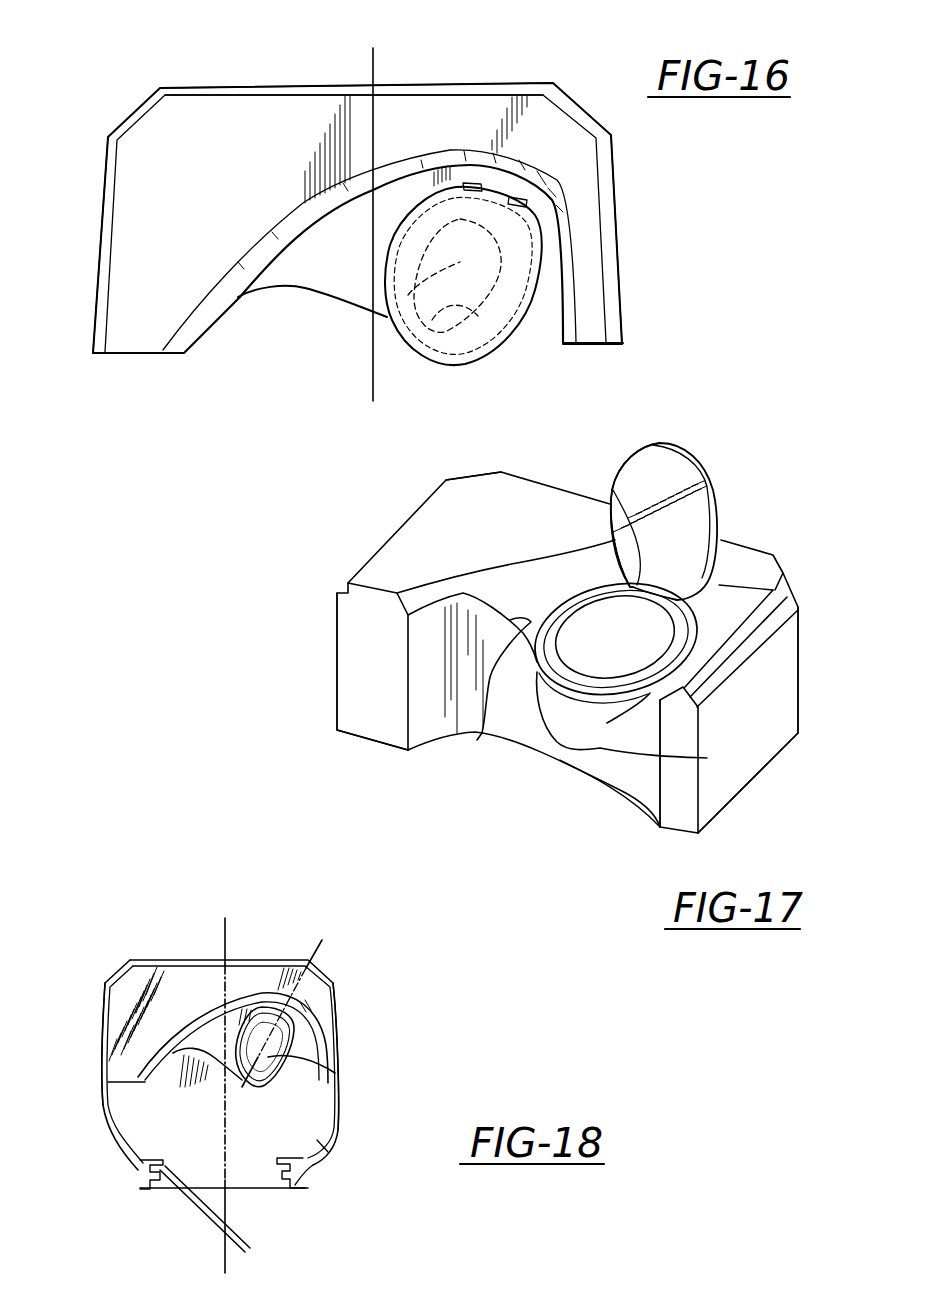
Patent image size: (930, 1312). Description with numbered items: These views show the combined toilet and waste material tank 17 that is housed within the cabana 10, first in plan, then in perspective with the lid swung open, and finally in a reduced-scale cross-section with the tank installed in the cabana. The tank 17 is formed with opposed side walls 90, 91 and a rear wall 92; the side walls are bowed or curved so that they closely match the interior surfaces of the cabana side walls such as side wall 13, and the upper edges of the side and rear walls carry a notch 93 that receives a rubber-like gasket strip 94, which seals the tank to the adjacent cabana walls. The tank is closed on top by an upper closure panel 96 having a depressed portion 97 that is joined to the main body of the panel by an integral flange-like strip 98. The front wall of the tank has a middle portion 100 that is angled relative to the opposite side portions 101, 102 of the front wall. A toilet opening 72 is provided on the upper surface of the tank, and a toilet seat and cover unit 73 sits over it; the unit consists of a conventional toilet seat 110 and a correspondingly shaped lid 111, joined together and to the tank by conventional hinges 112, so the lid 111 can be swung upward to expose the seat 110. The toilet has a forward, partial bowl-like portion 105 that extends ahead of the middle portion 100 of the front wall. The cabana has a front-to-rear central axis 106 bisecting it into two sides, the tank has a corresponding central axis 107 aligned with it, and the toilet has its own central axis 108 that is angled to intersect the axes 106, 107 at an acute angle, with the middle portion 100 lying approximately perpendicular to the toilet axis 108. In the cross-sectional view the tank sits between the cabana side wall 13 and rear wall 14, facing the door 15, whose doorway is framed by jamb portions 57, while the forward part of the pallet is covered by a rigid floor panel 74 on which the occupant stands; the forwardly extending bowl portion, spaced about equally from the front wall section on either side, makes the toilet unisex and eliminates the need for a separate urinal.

In FIG. 18, the cabana 10 is at (281, 958).
In FIG. 18, the side wall 13 is at (102, 1107).
In FIG. 18, the rear wall 14 is at (192, 959).
In FIG. 18, the door 15 is at (201, 1213).
In FIG. 16, the combined toilet and waste material tank 17 is at (593, 210).
In FIG. 17, the combined toilet and waste material tank 17 is at (408, 550).
In FIG. 18, the combined toilet and waste material tank 17 is at (136, 980).
In FIG. 18, the jamb portions 57 is at (297, 1187).
In FIG. 16, the toilet opening 72 is at (463, 314).
In FIG. 18, the toilet opening 72 is at (330, 1078).
In FIG. 16, the toilet seat and cover unit 73 is at (408, 356).
In FIG. 17, the toilet seat and cover unit 73 is at (710, 498).
In FIG. 18, the rigid floor panel 74 is at (333, 1152).
In FIG. 16, the side wall 90 is at (618, 283).
In FIG. 17, the side wall 90 is at (782, 680).
In FIG. 16, the side wall 91 is at (100, 219).
In FIG. 17, the side wall 91 is at (346, 633).
In FIG. 16, the rear wall 92 is at (312, 86).
In FIG. 17, the notch 93 is at (798, 615).
In FIG. 18, the gasket strip 94 is at (337, 1023).
In FIG. 16, the upper closure panel 96 is at (177, 188).
In FIG. 17, the upper closure panel 96 is at (439, 509).
In FIG. 16, the depressed portion 97 is at (311, 284).
In FIG. 17, the depressed portion 97 is at (477, 737).
In FIG. 16, the flange-like strip 98 is at (285, 232).
In FIG. 17, the flange-like strip 98 is at (531, 561).
In FIG. 16, the middle portion 100 is at (542, 347).
In FIG. 17, the middle portion 100 is at (640, 797).
In FIG. 16, the side portion 101 is at (139, 356).
In FIG. 17, the side portion 101 is at (348, 684).
In FIG. 16, the side portion 102 is at (598, 346).
In FIG. 17, the side portion 102 is at (687, 722).
In FIG. 17, the partial bowl-like portion 105 is at (707, 758).
In FIG. 18, the central axis 106 is at (230, 1205).
In FIG. 16, the central axis 107 is at (374, 75).
In FIG. 18, the central axis 108 is at (343, 945).
In FIG. 16, the toilet seat 110 is at (442, 264).
In FIG. 17, the toilet seat 110 is at (537, 667).
In FIG. 16, the lid 111 is at (393, 239).
In FIG. 17, the lid 111 is at (680, 470).
In FIG. 16, the hinges 112 is at (480, 185).
In FIG. 17, the hinges 112 is at (617, 493).